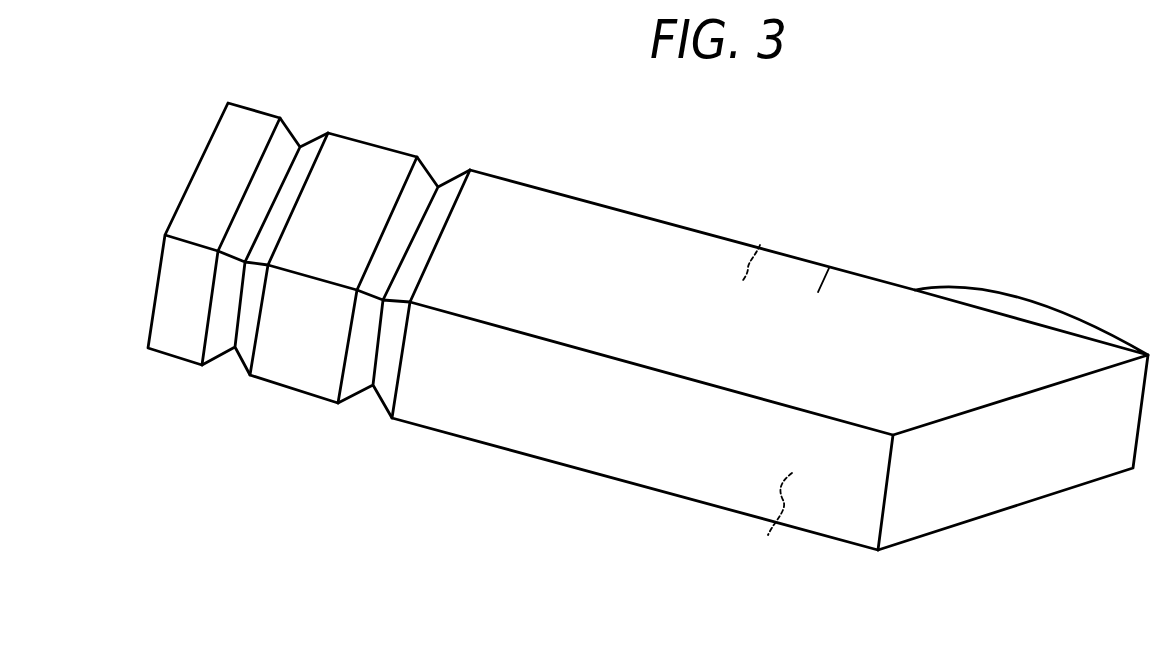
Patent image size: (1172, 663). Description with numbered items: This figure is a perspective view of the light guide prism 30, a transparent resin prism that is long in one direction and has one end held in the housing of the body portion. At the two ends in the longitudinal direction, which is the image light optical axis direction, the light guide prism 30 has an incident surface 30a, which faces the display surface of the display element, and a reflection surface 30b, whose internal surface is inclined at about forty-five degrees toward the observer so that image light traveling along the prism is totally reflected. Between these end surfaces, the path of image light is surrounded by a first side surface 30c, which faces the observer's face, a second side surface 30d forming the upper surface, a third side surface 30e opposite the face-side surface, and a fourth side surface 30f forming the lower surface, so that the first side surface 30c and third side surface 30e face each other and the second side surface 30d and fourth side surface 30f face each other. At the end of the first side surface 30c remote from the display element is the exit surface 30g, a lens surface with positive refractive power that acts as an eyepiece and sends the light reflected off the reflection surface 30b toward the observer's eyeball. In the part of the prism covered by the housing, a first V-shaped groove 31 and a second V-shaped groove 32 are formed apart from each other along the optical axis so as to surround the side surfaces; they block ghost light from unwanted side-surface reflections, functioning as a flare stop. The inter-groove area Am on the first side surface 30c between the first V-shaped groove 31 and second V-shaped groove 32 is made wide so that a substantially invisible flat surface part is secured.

The light guide prism 30 is at (569, 597).
The incident surface 30a is at (175, 180).
The reflection surface 30b is at (1012, 460).
The first side surface 30c is at (760, 245).
The second side surface 30d is at (829, 268).
The third side surface 30e is at (688, 450).
The fourth side surface 30f is at (772, 517).
The exit surface 30g is at (1062, 284).
The first V-shaped groove 31 is at (288, 145).
The second V-shaped groove 32 is at (423, 180).
The inter-groove area Am is at (360, 160).